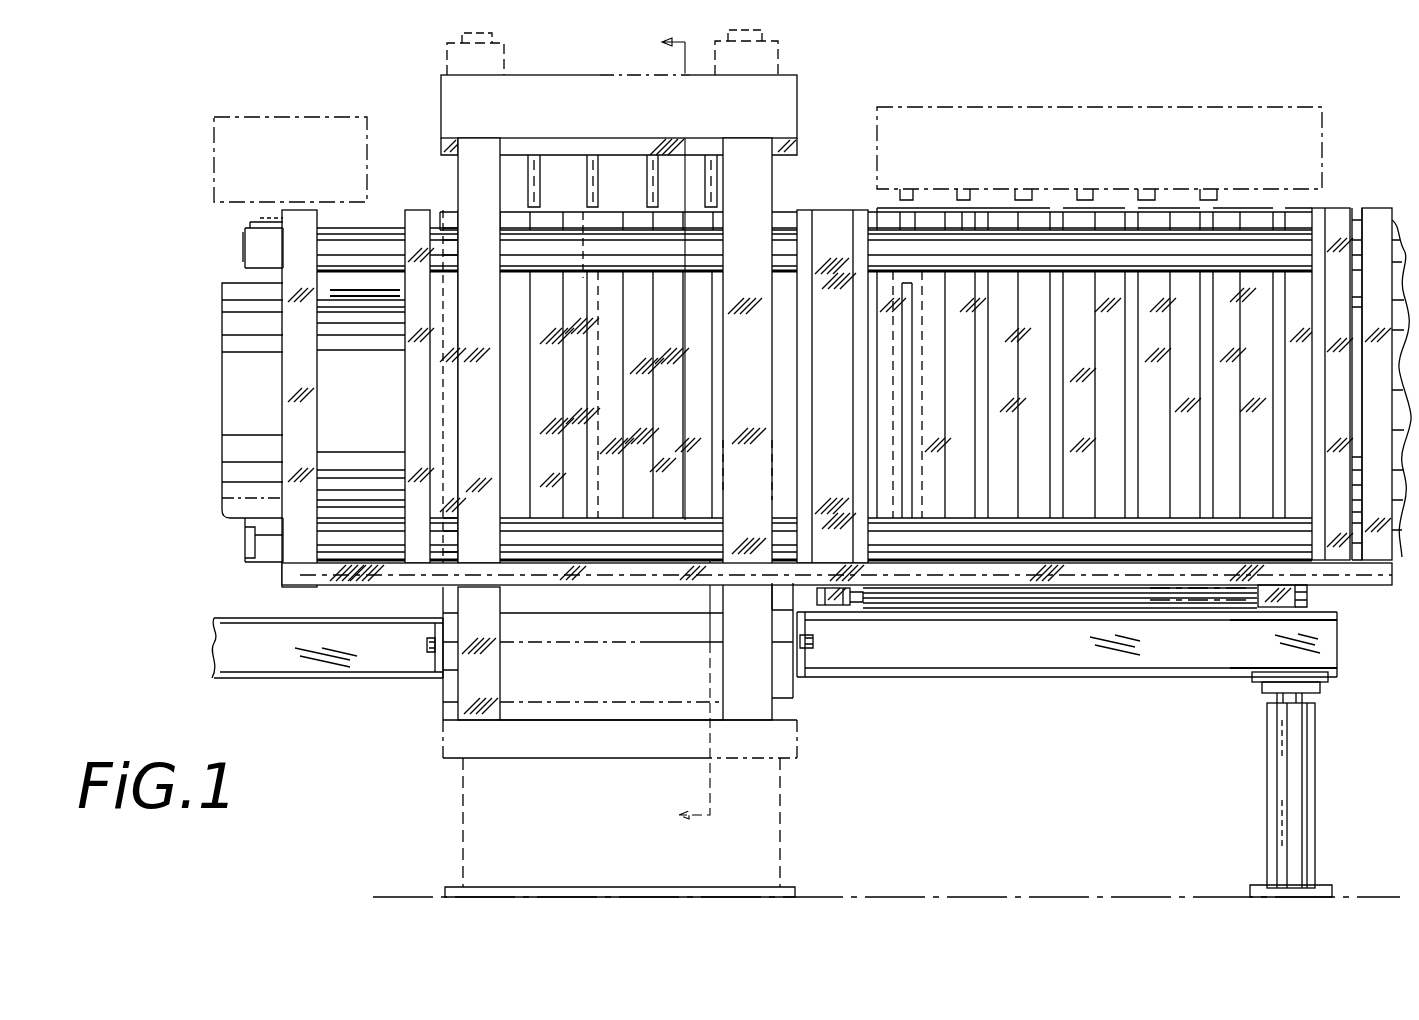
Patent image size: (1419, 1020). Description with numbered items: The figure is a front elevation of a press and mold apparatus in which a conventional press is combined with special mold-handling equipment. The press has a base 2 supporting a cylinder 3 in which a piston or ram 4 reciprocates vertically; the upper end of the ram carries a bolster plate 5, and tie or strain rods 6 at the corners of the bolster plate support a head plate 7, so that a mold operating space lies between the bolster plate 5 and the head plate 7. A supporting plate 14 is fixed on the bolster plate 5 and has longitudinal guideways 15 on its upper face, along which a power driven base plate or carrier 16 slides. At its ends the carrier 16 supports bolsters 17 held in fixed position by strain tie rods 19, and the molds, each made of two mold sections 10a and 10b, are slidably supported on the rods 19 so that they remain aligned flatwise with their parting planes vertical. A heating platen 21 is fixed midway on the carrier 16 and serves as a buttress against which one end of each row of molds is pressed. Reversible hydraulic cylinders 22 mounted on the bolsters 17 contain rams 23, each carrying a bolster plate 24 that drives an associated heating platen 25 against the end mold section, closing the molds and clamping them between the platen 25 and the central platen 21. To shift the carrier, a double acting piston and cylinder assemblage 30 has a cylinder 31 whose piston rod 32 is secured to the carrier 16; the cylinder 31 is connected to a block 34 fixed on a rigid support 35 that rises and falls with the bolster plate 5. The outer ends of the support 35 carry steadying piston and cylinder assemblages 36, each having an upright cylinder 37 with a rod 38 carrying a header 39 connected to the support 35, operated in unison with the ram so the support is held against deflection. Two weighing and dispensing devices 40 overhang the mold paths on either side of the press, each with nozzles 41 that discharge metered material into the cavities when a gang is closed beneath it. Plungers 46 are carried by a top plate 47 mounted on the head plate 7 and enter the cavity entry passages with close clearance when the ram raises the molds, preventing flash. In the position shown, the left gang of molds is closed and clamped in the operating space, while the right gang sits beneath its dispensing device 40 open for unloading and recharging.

The base 2 is at (795, 889).
The cylinder 3 is at (782, 824).
The piston or ram 4 is at (707, 712).
The bolster plate 5 is at (520, 680).
The tie or strain rods 6 is at (607, 222).
The head plate 7 is at (795, 90).
The mold section 10a is at (513, 222).
The mold section 10b is at (552, 222).
The supporting plate 14 is at (600, 600).
The longitudinal guideways 15 is at (648, 584).
The base plate or carrier 16 is at (1140, 592).
The bolsters 17 is at (295, 588).
The strain tie rods 19 is at (1157, 268).
The heating platen 21 is at (850, 212).
The reversible hydraulic cylinders 22 is at (233, 520).
The pistons or rams 23 is at (360, 297).
The bolster plate 24 is at (410, 213).
The heating platen 25 is at (433, 213).
The double acting piston and cylinder assemblage 30 is at (945, 608).
The cylinder 31 is at (1238, 602).
The piston rod 32 is at (850, 606).
The block 34 is at (1300, 594).
The rigid support 35 is at (305, 680).
The piston and cylinder assemblages 36 is at (1312, 787).
The upright cylinder 37 is at (1315, 754).
The rod 38 is at (1318, 692).
The headers 39 is at (1325, 682).
The weighing and dispensing devices 40 is at (333, 118).
The nozzle 41 is at (1212, 194).
The plungers 46 is at (650, 190).
The top plate 47 is at (800, 140).